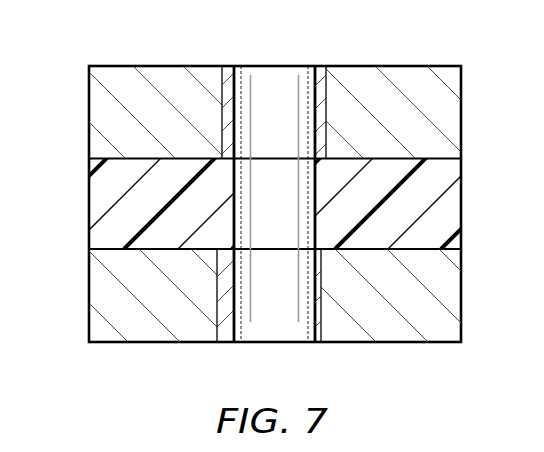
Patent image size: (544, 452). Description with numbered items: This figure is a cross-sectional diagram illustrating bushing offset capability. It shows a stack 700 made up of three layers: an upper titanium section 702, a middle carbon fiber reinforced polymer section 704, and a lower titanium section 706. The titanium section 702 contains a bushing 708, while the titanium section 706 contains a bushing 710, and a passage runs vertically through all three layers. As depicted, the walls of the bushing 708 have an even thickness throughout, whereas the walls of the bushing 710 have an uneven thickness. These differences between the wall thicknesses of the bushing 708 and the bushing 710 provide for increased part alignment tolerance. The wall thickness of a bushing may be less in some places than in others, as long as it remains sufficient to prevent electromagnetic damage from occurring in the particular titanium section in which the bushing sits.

The stack 700 is at (68, 62).
The titanium section 702 is at (404, 66).
The carbon fiber reinforced polymer (CFRP) section 704 is at (461, 201).
The titanium section 706 is at (400, 342).
The bushing 708 is at (326, 91).
The bushing 710 is at (238, 325).